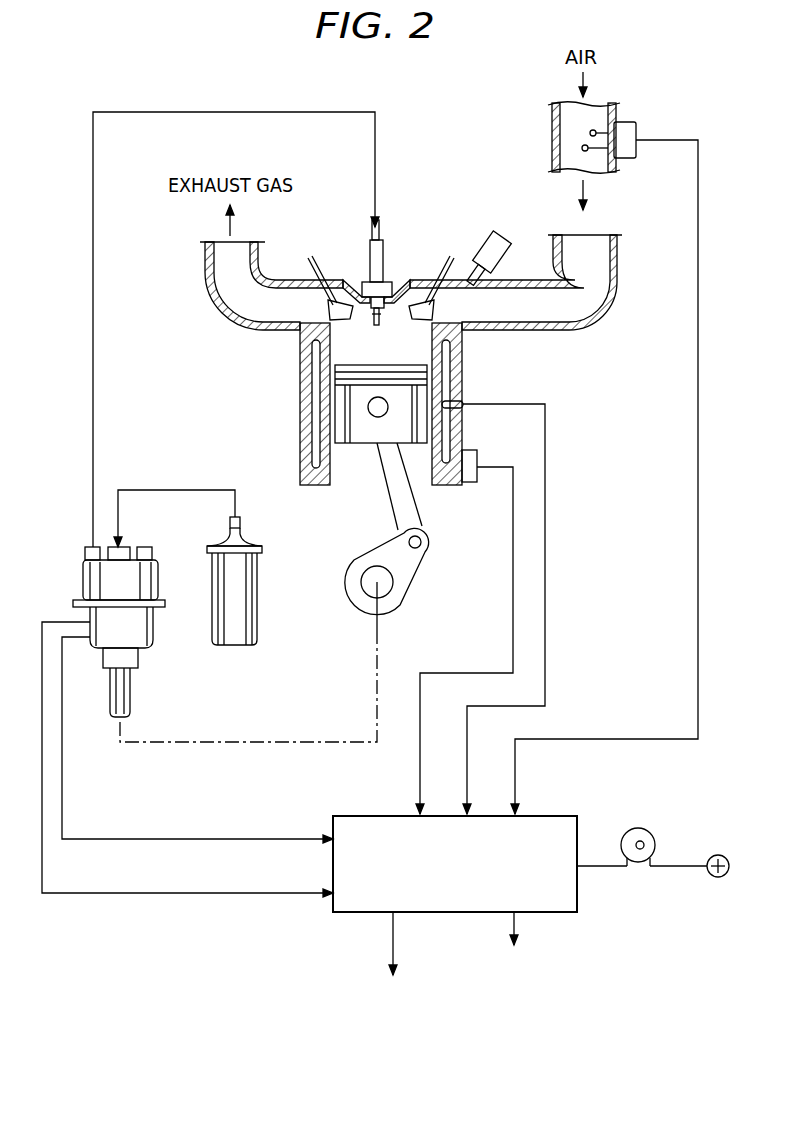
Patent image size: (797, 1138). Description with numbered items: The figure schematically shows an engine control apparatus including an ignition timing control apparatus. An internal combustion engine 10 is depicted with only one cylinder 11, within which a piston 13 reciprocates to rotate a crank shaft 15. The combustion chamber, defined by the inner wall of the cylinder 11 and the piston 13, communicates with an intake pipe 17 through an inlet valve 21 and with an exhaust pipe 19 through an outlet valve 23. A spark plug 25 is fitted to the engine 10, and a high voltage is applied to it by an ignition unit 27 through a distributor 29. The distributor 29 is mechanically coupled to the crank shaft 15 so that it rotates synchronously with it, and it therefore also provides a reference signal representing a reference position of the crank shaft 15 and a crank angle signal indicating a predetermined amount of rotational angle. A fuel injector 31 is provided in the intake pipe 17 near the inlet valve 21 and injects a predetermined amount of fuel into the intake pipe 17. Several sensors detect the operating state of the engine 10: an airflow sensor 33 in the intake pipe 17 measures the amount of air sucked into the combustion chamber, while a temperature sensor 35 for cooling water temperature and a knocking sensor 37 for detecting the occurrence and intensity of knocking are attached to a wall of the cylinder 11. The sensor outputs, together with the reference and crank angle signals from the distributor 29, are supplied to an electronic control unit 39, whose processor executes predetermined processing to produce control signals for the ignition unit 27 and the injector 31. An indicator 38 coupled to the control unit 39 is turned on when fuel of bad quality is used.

The internal combustion engine 10 is at (270, 384).
The cylinder 11 is at (462, 367).
The piston 13 is at (355, 443).
The crank shaft 15 is at (358, 582).
The intake pipe 17 is at (618, 270).
The exhaust pipe 19 is at (207, 266).
The inlet valve 21 is at (412, 320).
The outlet valve 23 is at (346, 319).
The spark plug 25 is at (386, 258).
The ignition unit 27 is at (231, 647).
The distributor 29 is at (83, 580).
The fuel injector 31 is at (486, 243).
The airflow sensor 33 is at (628, 122).
The temperature sensor 35 is at (463, 403).
The knocking sensor 37 is at (470, 483).
The indicator 38 is at (637, 827).
The electronic control unit 39 is at (554, 814).